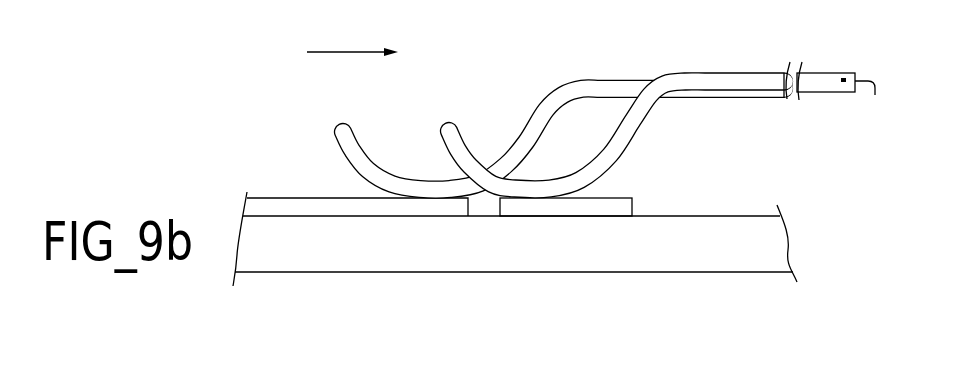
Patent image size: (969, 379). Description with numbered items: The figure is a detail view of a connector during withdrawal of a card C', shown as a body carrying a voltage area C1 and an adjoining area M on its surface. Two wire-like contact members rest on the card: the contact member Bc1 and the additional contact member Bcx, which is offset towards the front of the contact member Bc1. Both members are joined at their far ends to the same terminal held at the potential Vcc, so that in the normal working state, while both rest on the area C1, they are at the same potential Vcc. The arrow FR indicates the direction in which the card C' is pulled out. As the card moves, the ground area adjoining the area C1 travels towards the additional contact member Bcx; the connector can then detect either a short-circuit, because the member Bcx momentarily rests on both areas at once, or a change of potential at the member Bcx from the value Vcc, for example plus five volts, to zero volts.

The metallization pad M is at (277, 207).
The substrate C' is at (515, 275).
The area C1 is at (602, 210).
The additional contact member Bcx is at (590, 70).
The contact member Bc1 is at (687, 63).
The potential VCC Vcc is at (841, 94).
The force direction FR is at (352, 35).